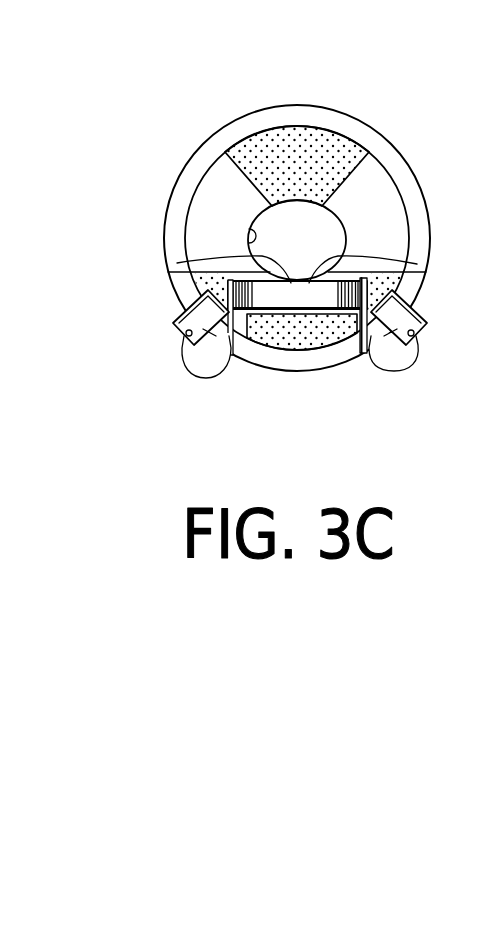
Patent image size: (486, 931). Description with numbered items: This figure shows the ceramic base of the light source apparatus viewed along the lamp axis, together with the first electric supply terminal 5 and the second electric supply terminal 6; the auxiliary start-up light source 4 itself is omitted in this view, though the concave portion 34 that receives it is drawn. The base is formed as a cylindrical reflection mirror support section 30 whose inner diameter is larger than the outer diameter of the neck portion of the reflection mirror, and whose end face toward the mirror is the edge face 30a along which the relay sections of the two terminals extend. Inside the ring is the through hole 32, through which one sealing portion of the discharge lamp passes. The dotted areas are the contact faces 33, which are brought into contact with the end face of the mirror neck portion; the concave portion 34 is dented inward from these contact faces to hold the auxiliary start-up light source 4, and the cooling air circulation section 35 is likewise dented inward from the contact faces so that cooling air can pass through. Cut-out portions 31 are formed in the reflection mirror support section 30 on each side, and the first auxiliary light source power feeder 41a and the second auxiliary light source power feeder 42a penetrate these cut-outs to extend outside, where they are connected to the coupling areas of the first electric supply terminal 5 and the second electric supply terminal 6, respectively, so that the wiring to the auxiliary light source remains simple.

The reflection mirror support section 30 is at (344, 108).
The edge face of the reflection mirror support section 30a is at (220, 148).
The cut-out portions 31 is at (232, 355).
The through hole 32 is at (250, 240).
The contact faces 33 is at (263, 150).
The concave portion 34 is at (366, 272).
The cooling air circulation section 35 is at (204, 199).
The auxiliary start-up light source 4 is at (193, 272).
The first electric supply terminal 5 is at (399, 313).
The second electric supply terminal 6 is at (193, 281).
The first auxiliary light source power feeder 41a is at (405, 368).
The second auxiliary light source power feeder 42a is at (204, 378).